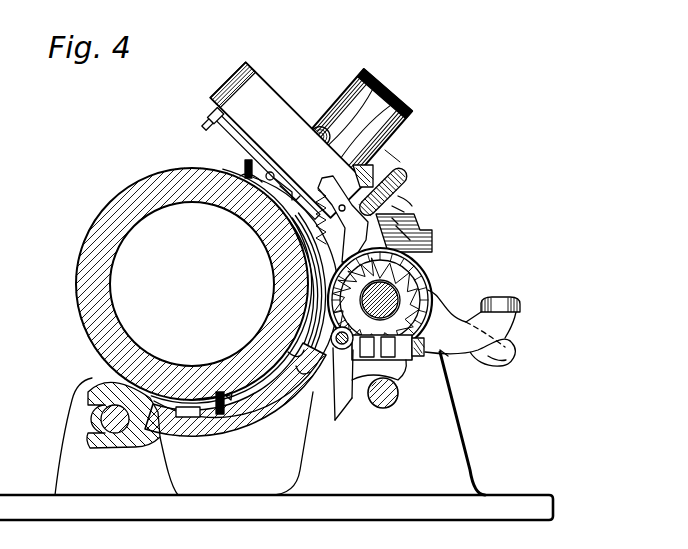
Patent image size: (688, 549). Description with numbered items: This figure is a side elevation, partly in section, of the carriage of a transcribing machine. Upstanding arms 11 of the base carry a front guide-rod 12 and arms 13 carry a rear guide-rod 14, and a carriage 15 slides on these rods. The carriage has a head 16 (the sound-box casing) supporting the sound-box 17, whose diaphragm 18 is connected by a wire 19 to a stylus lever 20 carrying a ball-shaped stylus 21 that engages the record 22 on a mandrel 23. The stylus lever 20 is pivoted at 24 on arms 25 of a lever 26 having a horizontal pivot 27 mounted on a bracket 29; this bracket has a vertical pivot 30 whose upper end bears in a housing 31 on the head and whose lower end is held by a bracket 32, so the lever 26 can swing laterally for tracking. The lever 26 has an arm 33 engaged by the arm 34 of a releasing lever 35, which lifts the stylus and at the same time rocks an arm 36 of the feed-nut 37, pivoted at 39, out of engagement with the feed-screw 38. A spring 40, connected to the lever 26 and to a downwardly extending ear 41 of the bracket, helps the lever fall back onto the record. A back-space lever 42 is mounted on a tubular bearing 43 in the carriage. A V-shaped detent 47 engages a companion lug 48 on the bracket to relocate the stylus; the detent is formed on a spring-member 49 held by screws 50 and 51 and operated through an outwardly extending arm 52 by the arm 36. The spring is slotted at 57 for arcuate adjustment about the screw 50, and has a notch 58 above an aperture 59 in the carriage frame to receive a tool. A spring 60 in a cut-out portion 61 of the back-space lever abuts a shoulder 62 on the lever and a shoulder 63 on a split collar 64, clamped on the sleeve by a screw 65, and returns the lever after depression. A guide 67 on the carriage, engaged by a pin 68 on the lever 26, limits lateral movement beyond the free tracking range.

The upstanding arms 11 is at (455, 443).
The front guide-rod 12 is at (432, 290).
The arms 13 is at (74, 450).
The rear guide-rod 14 is at (100, 415).
The carriage 15 is at (260, 410).
The head 16 is at (262, 100).
The sound-box 17 is at (383, 147).
The diaphragm 18 is at (366, 178).
The wire 19 is at (340, 218).
The stylus lever 20 is at (305, 190).
The stylus 21 is at (255, 182).
The record 22 is at (150, 188).
The mandrel 23 is at (132, 253).
The pivot 24 is at (280, 172).
The arms 25 is at (250, 167).
The lever 26 is at (250, 136).
The horizontal pivot 27 is at (356, 150).
The bracket 29 is at (396, 210).
The vertical pivot 30 is at (410, 200).
The housing 31 is at (410, 178).
The bracket 32 is at (402, 236).
The arm 33 is at (310, 258).
The arm 34 is at (415, 246).
The releasing lever 35 is at (497, 360).
The arm 36 is at (325, 288).
The feed-nut 37 is at (408, 380).
The feed-screw 38 is at (383, 409).
The pivot 39 is at (340, 391).
The spring 40 is at (268, 226).
The ear 41 is at (307, 240).
The back-space lever 42 is at (502, 314).
The tubular bearing 43 is at (417, 360).
The detent 47 is at (398, 229).
The lug 48 is at (396, 220).
The spring-member 49 is at (310, 338).
The screw 50 is at (300, 353).
The screw 51 is at (222, 398).
The arm 52 is at (320, 274).
The slot 57 is at (209, 425).
The notch 58 is at (193, 424).
The aperture 59 is at (177, 418).
The spring 60 is at (415, 268).
The cut-out portion 61 is at (330, 304).
The shoulder 62 is at (352, 368).
The shoulder 63 is at (425, 277).
The split collar 64 is at (432, 302).
The screw 65 is at (445, 355).
The guide 67 is at (217, 135).
The pin 68 is at (230, 120).